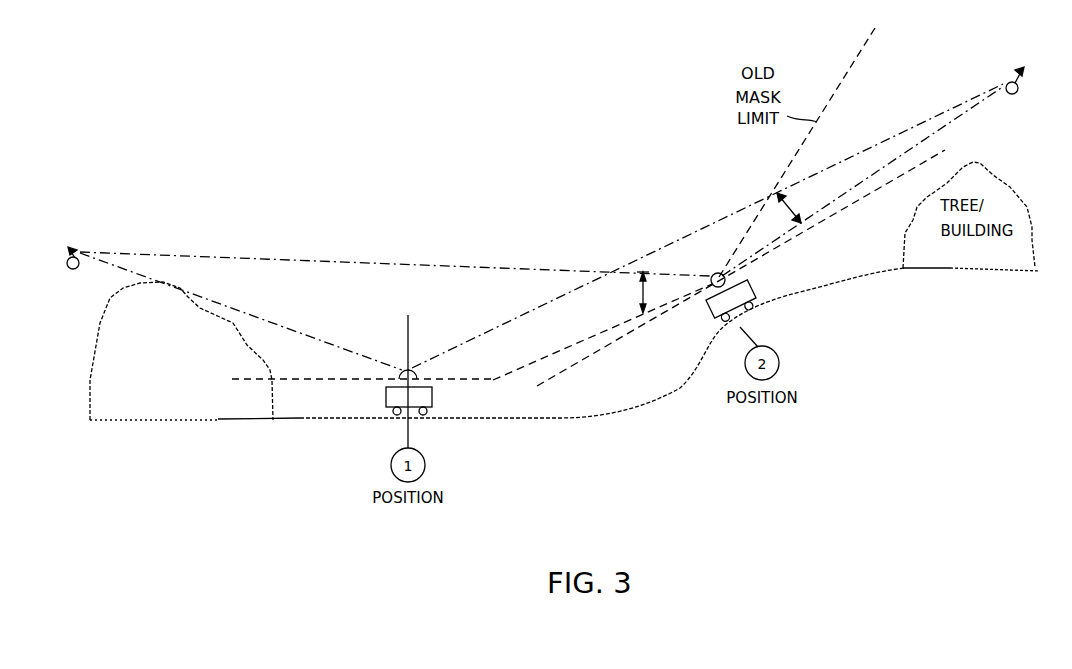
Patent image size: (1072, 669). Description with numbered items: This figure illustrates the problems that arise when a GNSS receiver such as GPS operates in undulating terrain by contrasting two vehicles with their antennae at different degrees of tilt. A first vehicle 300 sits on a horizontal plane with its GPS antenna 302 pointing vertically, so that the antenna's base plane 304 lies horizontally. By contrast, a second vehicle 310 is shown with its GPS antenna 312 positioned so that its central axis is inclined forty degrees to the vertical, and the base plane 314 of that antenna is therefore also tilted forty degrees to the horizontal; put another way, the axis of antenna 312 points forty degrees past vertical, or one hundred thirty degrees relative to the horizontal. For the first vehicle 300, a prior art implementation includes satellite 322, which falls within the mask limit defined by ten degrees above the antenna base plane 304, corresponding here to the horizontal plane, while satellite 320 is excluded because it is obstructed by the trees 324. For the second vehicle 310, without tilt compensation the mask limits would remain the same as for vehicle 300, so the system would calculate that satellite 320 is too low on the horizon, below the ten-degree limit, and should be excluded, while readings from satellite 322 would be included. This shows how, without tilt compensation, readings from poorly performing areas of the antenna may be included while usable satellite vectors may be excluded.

The first vehicle 300 is at (432, 398).
The GPS antenna 302 is at (413, 364).
The base plane 304 is at (493, 380).
The second vehicle 310 is at (757, 297).
The GPS antenna 312 is at (716, 273).
The base plane 314 is at (822, 224).
The satellite 320 is at (72, 270).
The satellite 322 is at (1017, 92).
The trees 324 is at (88, 380).